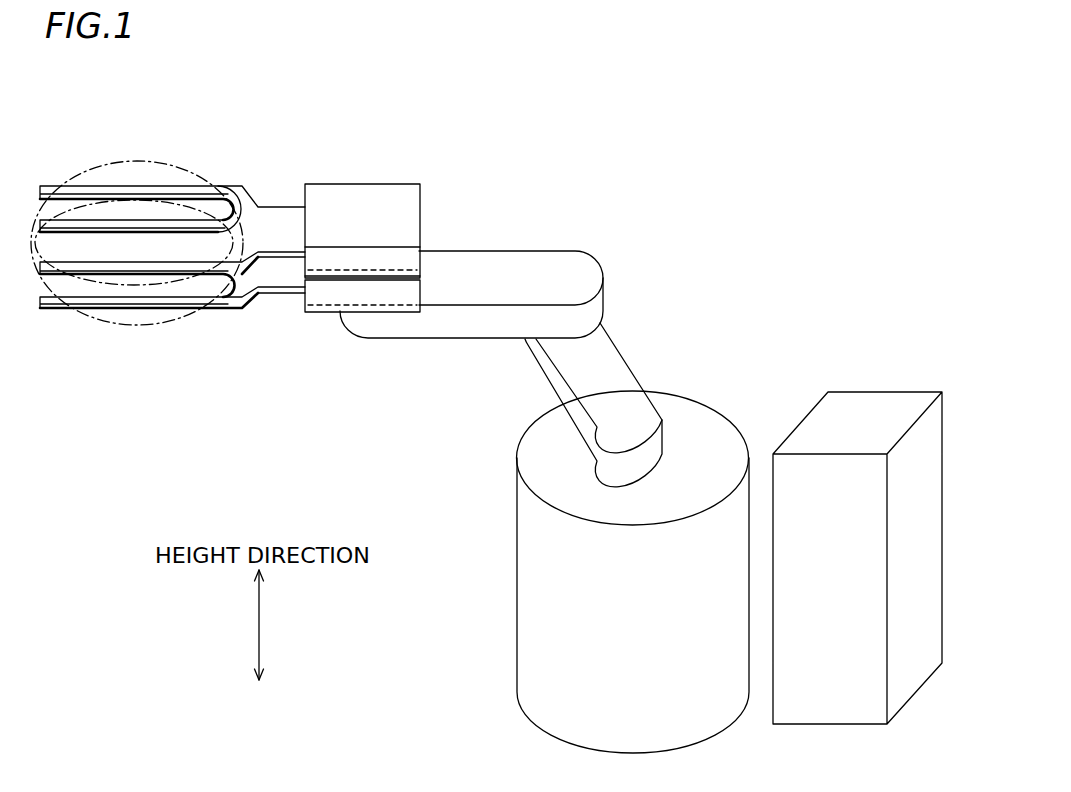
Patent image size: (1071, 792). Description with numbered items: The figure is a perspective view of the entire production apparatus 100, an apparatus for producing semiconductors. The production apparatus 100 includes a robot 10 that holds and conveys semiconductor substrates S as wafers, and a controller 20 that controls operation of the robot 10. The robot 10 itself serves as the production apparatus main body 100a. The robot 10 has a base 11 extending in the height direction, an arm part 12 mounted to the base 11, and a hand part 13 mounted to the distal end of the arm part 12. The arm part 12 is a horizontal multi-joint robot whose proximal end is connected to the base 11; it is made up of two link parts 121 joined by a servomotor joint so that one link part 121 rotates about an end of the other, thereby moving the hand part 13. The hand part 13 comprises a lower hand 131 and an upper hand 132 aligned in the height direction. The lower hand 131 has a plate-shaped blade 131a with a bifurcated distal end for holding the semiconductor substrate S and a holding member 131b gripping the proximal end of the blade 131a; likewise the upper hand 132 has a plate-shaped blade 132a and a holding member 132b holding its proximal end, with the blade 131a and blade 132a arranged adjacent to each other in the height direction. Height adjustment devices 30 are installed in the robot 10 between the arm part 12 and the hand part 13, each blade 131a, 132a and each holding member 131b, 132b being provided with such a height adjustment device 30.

The production apparatus 100 is at (891, 178).
The production apparatus main body 100a is at (767, 209).
The robot 10 is at (696, 268).
The base 11 is at (528, 545).
The arm part 12 is at (415, 439).
The link part 121 is at (437, 328).
The hand part 13 is at (465, 162).
The lower hand 131 is at (420, 290).
The blade 131a is at (230, 309).
The holding member 131b is at (303, 296).
The upper hand 132 is at (420, 218).
The blade 132a is at (248, 215).
The holding member 132b is at (304, 192).
The height adjustment device 30 is at (358, 270).
The controller 20 is at (863, 418).
The semiconductor substrate S is at (80, 174).